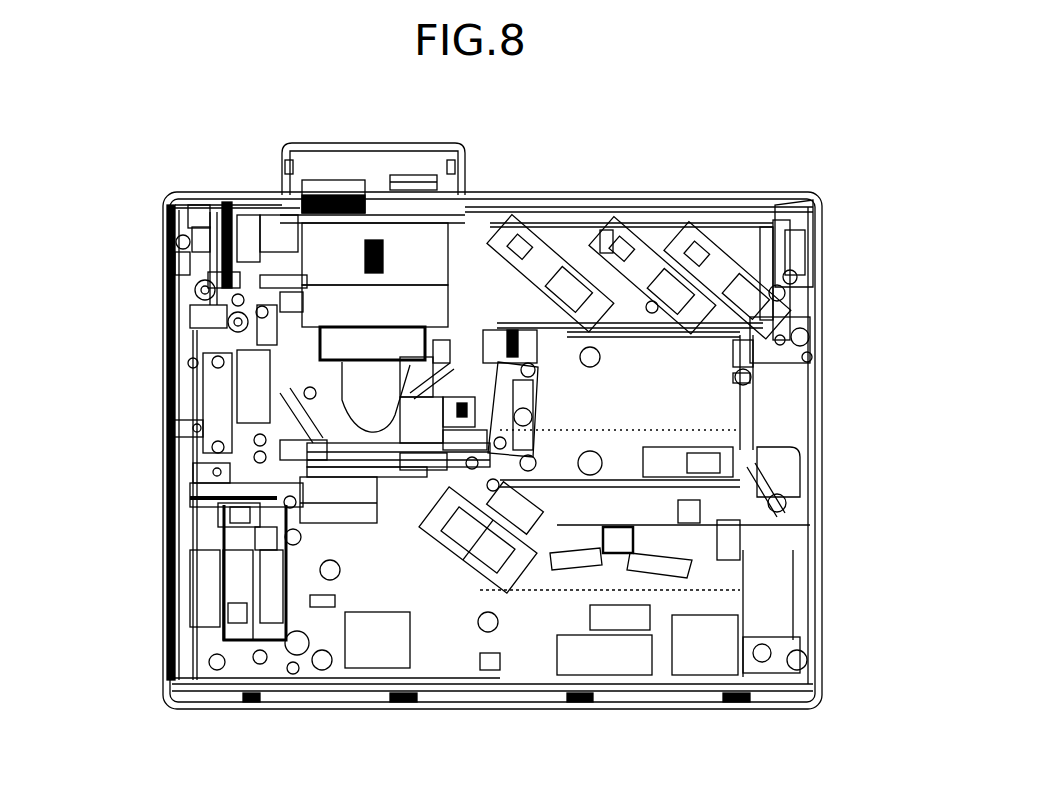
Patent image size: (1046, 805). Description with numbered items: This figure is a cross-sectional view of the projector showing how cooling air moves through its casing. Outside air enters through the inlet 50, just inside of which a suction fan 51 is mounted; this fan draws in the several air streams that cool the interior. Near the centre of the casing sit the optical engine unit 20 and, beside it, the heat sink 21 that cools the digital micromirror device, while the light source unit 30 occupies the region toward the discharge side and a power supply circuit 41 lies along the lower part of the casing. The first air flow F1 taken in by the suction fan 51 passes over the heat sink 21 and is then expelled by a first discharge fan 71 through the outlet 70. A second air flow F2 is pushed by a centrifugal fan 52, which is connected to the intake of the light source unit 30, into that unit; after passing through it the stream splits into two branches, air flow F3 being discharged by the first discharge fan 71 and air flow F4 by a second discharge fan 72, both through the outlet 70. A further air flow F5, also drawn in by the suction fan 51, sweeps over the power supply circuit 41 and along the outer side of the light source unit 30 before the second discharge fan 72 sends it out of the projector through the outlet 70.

The optical engine unit 20 is at (287, 350).
The heat sink 21 is at (283, 488).
The light source unit 30 is at (713, 392).
The power supply circuit 41 is at (377, 652).
The inlet 50 is at (160, 566).
The suction fan 51 is at (242, 618).
The centrifugal fan 52 is at (503, 523).
The outlet 70 is at (797, 183).
The first discharge fan 71 is at (519, 233).
The second discharge fan 72 is at (723, 277).
The air flow F1 is at (600, 150).
The air flow F2 is at (720, 163).
The air flow F3 is at (462, 504).
The air flow F4 is at (732, 137).
The air flow F5 is at (783, 158).